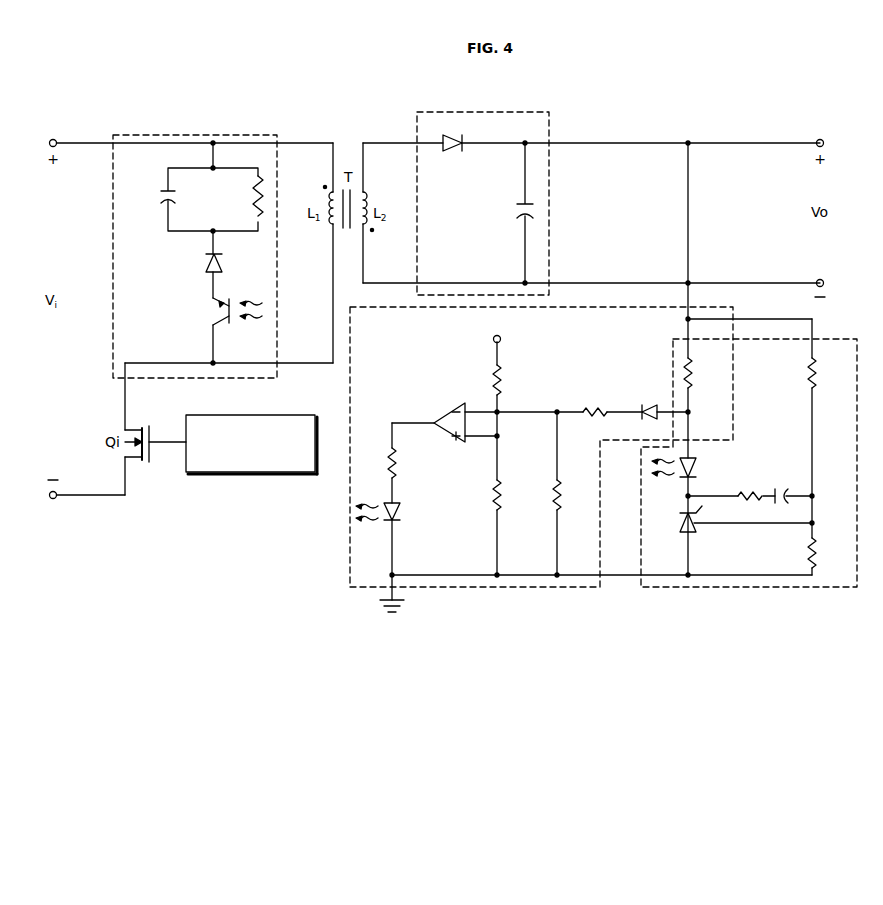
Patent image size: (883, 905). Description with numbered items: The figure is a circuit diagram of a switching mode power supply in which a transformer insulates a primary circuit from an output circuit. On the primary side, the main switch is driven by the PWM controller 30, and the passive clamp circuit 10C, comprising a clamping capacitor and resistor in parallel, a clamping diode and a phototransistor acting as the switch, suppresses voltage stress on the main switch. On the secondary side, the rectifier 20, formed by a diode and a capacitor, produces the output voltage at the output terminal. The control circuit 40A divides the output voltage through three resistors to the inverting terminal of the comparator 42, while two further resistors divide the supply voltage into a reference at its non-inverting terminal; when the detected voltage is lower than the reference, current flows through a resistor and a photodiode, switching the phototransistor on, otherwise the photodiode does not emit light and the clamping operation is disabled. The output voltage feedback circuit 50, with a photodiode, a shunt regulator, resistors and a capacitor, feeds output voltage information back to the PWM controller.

The passive clamp circuit 10C is at (228, 135).
The rectifier 20 is at (549, 125).
The PWM controller 30 is at (285, 413).
The control circuit 40A is at (581, 464).
The comparator 42 is at (447, 410).
The output voltage feedback circuit 50 is at (753, 587).